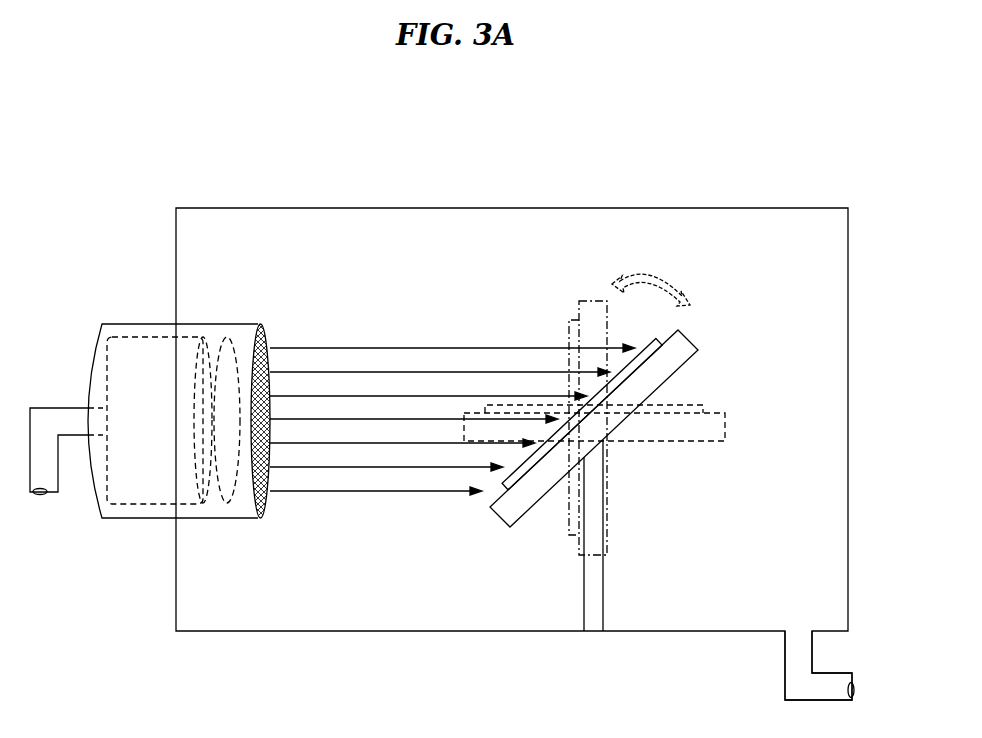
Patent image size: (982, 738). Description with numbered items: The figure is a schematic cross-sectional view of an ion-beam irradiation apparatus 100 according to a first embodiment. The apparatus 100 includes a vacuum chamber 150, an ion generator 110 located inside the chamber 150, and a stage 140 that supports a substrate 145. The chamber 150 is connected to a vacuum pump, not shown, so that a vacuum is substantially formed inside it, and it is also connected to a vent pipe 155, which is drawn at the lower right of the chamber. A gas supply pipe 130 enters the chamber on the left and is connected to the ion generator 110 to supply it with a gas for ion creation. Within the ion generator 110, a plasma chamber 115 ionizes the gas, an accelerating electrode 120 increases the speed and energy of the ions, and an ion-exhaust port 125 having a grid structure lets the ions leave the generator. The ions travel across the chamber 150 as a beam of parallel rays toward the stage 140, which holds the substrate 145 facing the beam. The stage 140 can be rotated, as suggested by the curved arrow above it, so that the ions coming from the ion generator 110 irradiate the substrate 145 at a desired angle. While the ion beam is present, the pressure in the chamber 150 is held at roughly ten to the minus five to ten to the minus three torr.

The ion-beam irradiation apparatus 100 is at (552, 186).
The ion generator 110 is at (100, 300).
The plasma chamber 115 is at (135, 348).
The accelerating electrode 120 is at (222, 348).
The ion-exhaust port 125 is at (265, 320).
The gas supply pipe 130 is at (48, 423).
The stage 140 is at (669, 367).
The substrate 145 is at (677, 331).
The vacuum chamber 150 is at (833, 448).
The vent pipe 155 is at (795, 665).